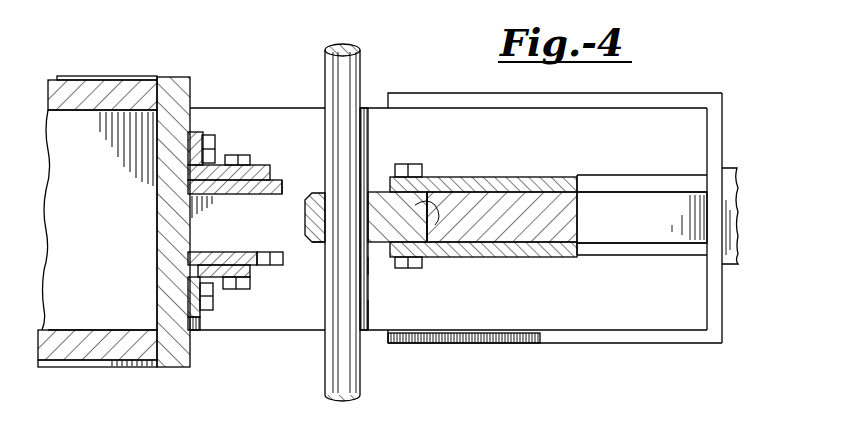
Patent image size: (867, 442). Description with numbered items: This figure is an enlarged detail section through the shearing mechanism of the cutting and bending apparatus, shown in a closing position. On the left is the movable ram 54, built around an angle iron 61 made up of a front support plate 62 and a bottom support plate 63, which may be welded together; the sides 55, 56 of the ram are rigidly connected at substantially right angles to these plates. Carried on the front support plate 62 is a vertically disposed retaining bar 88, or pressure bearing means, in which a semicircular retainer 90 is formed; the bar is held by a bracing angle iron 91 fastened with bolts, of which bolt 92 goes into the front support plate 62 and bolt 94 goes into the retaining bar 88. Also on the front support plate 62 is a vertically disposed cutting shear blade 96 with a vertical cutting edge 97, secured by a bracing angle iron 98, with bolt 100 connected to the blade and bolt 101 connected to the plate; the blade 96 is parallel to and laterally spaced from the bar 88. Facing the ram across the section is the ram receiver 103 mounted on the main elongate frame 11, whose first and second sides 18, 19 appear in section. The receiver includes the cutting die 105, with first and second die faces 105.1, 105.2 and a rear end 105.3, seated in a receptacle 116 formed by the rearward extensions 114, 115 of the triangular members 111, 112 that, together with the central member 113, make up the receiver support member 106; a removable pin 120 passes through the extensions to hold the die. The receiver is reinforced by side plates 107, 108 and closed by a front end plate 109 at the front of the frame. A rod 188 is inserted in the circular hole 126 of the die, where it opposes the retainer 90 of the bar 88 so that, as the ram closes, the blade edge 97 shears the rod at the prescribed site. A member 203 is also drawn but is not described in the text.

The main elongate frame 11 is at (620, 125).
The first side of frame 18 is at (193, 335).
The second side of frame 19 is at (236, 108).
The ram 54 is at (115, 68).
The side of ram 55 is at (102, 330).
The side of ram 56 is at (52, 112).
The angle iron 61 is at (163, 367).
The front support plate 62 is at (163, 78).
The bottom support plate 63 is at (63, 292).
The retaining bar 88 is at (250, 253).
The semicircular retainer 90 is at (270, 265).
The bracing angle iron 91 is at (245, 283).
The bolt 92 is at (208, 310).
The bolt 94 is at (243, 290).
The cutting shear blade 96 is at (228, 194).
The cutting edge 97 is at (282, 190).
The bracing angle iron 98 is at (258, 165).
The bolt 100 is at (242, 155).
The bolt 101 is at (209, 135).
The ram receiver 103 is at (544, 170).
The cutting die 105 is at (413, 210).
The first die face 105.1 is at (320, 193).
The second die face 105.2 is at (318, 243).
The rear end of cutting die 105.3 is at (430, 217).
The receiver support member 106 is at (520, 258).
The receiver reinforcing side plate 107 is at (568, 343).
The receiver reinforcing side plate 108 is at (672, 95).
The front end plate 109 is at (718, 310).
The triangular member 111 is at (598, 257).
The triangular member 112 is at (615, 178).
The central member 113 is at (630, 243).
The rearward extension 114 is at (370, 265).
The rearward extension 115 is at (392, 175).
The receptacle 116 is at (367, 320).
The removable pin 120 is at (410, 268).
The circular hole 126 is at (366, 180).
The rod 188 is at (365, 60).
The support member 203 is at (735, 170).